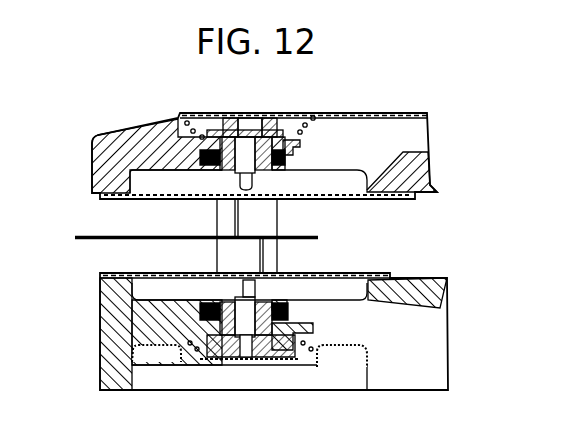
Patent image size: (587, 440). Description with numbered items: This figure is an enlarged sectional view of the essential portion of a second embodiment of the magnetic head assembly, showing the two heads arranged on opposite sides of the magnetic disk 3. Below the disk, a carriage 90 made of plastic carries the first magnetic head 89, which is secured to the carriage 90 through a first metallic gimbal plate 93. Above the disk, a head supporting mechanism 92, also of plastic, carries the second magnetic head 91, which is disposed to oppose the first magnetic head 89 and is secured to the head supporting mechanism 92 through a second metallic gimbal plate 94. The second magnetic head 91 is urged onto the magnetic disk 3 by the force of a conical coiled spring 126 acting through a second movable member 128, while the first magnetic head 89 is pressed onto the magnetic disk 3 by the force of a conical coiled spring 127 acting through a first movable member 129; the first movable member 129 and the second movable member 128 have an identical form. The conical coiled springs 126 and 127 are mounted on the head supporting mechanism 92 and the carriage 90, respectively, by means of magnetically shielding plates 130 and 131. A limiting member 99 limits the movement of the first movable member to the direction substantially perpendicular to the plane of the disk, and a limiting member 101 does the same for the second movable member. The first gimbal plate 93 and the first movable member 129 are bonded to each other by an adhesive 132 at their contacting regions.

The magnetic disk 3 is at (92, 241).
The first magnetic head 89 is at (275, 249).
The carriage 90 is at (103, 322).
The second magnetic head 91 is at (278, 210).
The head supporting mechanism 92 is at (125, 137).
The first metallic gimbal plate 93 is at (358, 287).
The second metallic gimbal plate 94 is at (132, 197).
The limiting member 99 is at (292, 312).
The limiting member 101 is at (285, 160).
The conical coiled spring 126 is at (313, 133).
The conical coiled spring 127 is at (303, 357).
The second movable member 128 is at (300, 141).
The first movable member 129 is at (313, 332).
The magnetically shielding plate 130 is at (201, 113).
The magnetically shielding plate 131 is at (170, 367).
The adhesive 132 is at (236, 288).